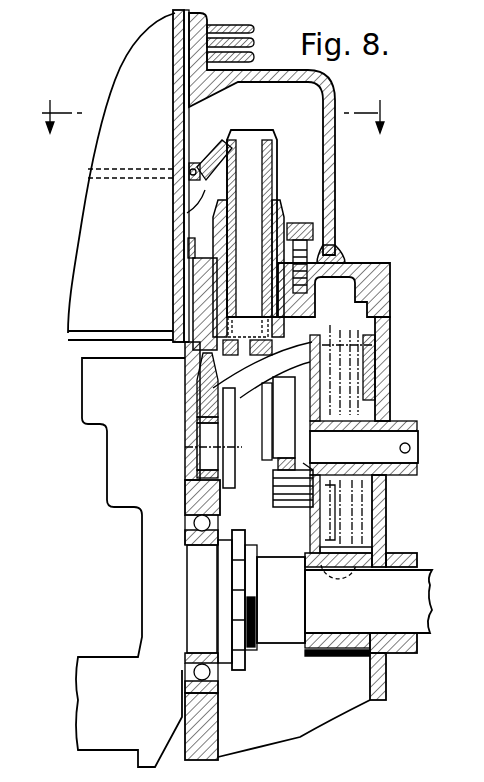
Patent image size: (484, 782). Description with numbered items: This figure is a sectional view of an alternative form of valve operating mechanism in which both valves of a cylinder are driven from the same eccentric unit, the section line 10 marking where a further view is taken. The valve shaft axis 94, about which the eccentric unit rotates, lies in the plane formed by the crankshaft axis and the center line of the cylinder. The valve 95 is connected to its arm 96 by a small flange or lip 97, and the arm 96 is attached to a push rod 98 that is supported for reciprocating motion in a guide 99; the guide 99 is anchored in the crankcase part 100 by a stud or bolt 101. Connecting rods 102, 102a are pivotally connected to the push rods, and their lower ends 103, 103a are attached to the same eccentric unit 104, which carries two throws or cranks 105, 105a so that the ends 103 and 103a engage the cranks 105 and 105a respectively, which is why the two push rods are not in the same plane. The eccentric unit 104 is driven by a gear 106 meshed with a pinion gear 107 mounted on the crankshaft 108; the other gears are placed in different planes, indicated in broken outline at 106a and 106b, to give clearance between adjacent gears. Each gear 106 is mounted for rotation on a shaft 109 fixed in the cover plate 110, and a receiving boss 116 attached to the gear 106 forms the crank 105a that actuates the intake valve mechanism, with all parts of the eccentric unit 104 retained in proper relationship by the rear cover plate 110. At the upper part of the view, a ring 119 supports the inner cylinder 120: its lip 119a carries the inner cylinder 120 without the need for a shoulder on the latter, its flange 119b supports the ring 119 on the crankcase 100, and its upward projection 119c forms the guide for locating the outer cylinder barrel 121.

The section line 10 is at (212, 116).
The valve shaft axis 94 is at (205, 444).
The valve 95 is at (190, 120).
The arm 96 is at (187, 213).
The flange or lip 97 is at (183, 189).
The push rod 98 is at (283, 182).
The guide 99 is at (277, 217).
The crankcase part 100 is at (357, 273).
The stud or bolt 101 is at (330, 256).
The connecting rod 102 is at (213, 378).
The connecting rod 102a is at (292, 350).
The lower end of connecting rod 103 is at (186, 500).
The lower end of connecting rod 103a is at (254, 592).
The eccentric unit 104 is at (200, 400).
The crank 105 is at (262, 490).
The crank 105a is at (303, 463).
The gear 106 is at (365, 308).
The gear 106a is at (378, 330).
The gear 106b is at (370, 345).
The pinion gear 107 is at (367, 552).
The crankshaft 108 is at (325, 657).
The shaft 109 is at (364, 448).
The cover plate 110 is at (388, 383).
The receiving boss 116 is at (263, 600).
The ring 119 is at (185, 288).
The lip 119a is at (172, 343).
The flange 119b is at (190, 275).
The upward projection 119c is at (188, 247).
The inner cylinder 120 is at (173, 107).
The outer cylinder barrel 121 is at (210, 22).